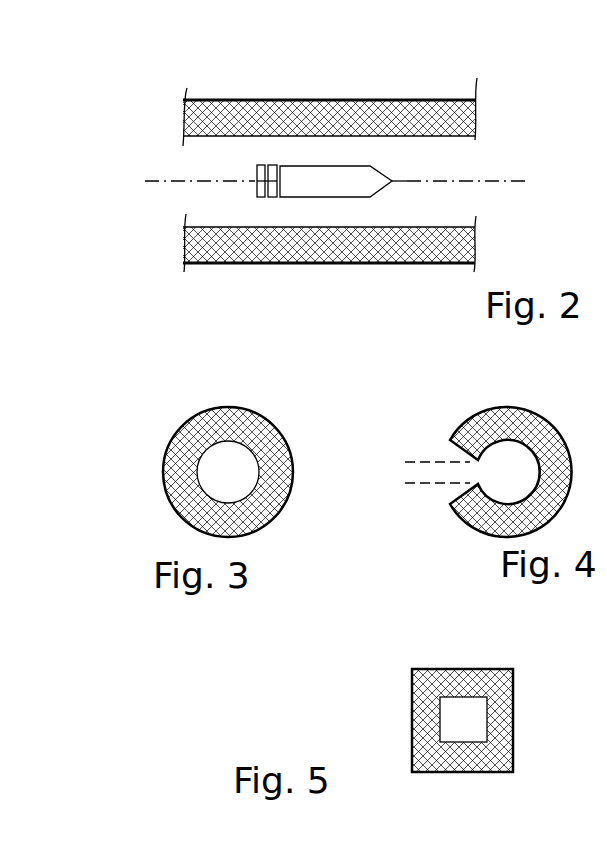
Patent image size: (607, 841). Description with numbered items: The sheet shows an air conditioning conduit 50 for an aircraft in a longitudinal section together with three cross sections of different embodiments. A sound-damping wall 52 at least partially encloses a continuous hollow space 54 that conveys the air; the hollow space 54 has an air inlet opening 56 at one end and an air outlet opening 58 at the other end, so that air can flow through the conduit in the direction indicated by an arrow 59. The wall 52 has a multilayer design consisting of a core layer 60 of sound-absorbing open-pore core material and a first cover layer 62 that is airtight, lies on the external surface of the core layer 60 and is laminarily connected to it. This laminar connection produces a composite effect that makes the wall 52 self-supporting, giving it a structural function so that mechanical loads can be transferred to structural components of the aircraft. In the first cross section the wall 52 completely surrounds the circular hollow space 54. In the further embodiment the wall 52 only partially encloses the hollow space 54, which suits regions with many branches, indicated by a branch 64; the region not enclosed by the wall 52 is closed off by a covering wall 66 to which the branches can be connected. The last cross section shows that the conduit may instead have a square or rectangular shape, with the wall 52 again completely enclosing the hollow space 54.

In FIG. 2, the air conditioning conduit 50 is at (135, 84).
In FIG. 2, the sound-damping wall 52 is at (490, 112).
In FIG. 3, the sound-damping wall 52 is at (303, 479).
In FIG. 4, the sound-damping wall 52 is at (478, 385).
In FIG. 5, the sound-damping wall 52 is at (392, 648).
In FIG. 2, the continuous hollow space 54 is at (418, 163).
In FIG. 3, the continuous hollow space 54 is at (228, 472).
In FIG. 4, the continuous hollow space 54 is at (508, 472).
In FIG. 5, the continuous hollow space 54 is at (463, 719).
In FIG. 2, the air inlet opening 56 is at (193, 162).
In FIG. 2, the air outlet opening 58 is at (472, 178).
In FIG. 2, the arrow 59 is at (336, 178).
In FIG. 2, the core layer 60 is at (306, 110).
In FIG. 3, the core layer 60 is at (248, 425).
In FIG. 5, the core layer 60 is at (425, 745).
In FIG. 2, the first cover layer 62 is at (232, 100).
In FIG. 3, the first cover layer 62 is at (192, 413).
In FIG. 4, the first cover layer 62 is at (511, 472).
In FIG. 5, the first cover layer 62 is at (488, 670).
In FIG. 4, the branch 64 is at (422, 458).
In FIG. 4, the covering wall 66 is at (467, 483).